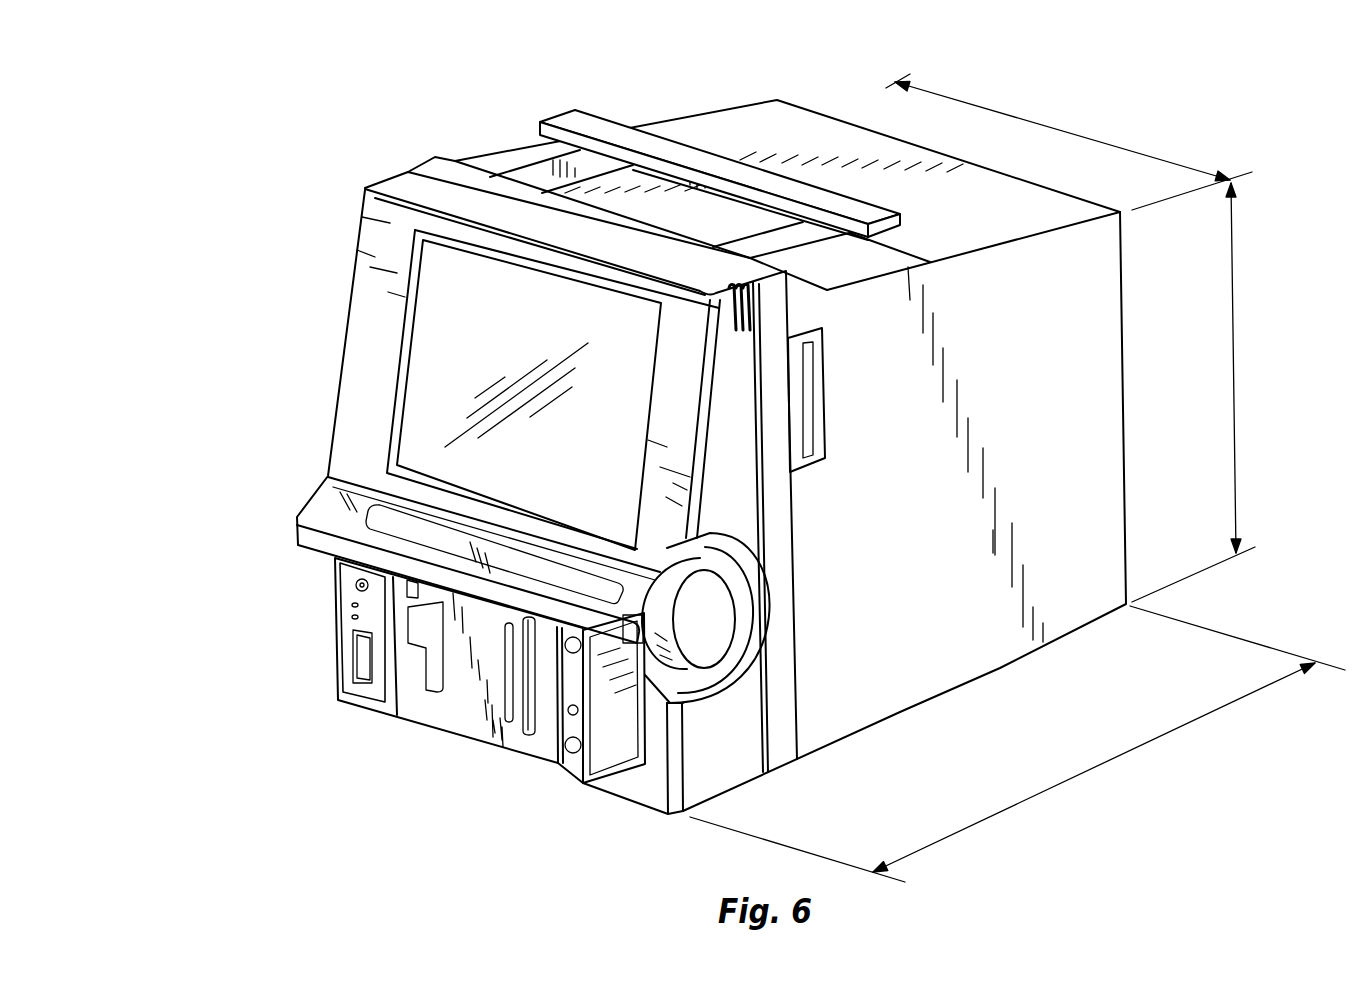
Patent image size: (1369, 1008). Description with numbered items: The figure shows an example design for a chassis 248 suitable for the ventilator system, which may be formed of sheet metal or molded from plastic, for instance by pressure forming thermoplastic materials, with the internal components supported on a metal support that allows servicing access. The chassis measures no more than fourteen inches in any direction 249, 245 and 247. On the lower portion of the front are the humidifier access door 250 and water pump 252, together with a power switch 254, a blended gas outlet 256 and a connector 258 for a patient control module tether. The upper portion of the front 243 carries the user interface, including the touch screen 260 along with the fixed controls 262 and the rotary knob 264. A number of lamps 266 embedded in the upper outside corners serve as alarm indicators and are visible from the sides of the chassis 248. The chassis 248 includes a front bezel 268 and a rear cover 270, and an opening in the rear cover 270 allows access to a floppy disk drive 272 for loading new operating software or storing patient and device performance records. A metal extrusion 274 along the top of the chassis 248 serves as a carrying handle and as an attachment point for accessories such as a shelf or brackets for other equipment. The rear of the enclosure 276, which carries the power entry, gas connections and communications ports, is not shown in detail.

The upper portion of the front 243 is at (365, 412).
The direction 245 is at (1113, 757).
The direction 247 is at (1233, 355).
The chassis 248 is at (721, 466).
The direction 249 is at (1060, 128).
The humidifier access door 250 is at (460, 705).
The water pump 252 is at (630, 750).
The power switch 254 is at (365, 657).
The blended gas outlet 256 is at (357, 585).
The connector 258 is at (573, 757).
The touch screen 260 is at (453, 333).
The fixed controls 262 is at (345, 502).
The rotary knob 264 is at (713, 623).
The lamps 266 is at (752, 295).
The front bezel 268 is at (392, 222).
The rear cover 270 is at (1080, 577).
The floppy disk drive 272 is at (817, 402).
The metal extrusion 274 is at (590, 128).
The rear of the enclosure 276 is at (1123, 333).